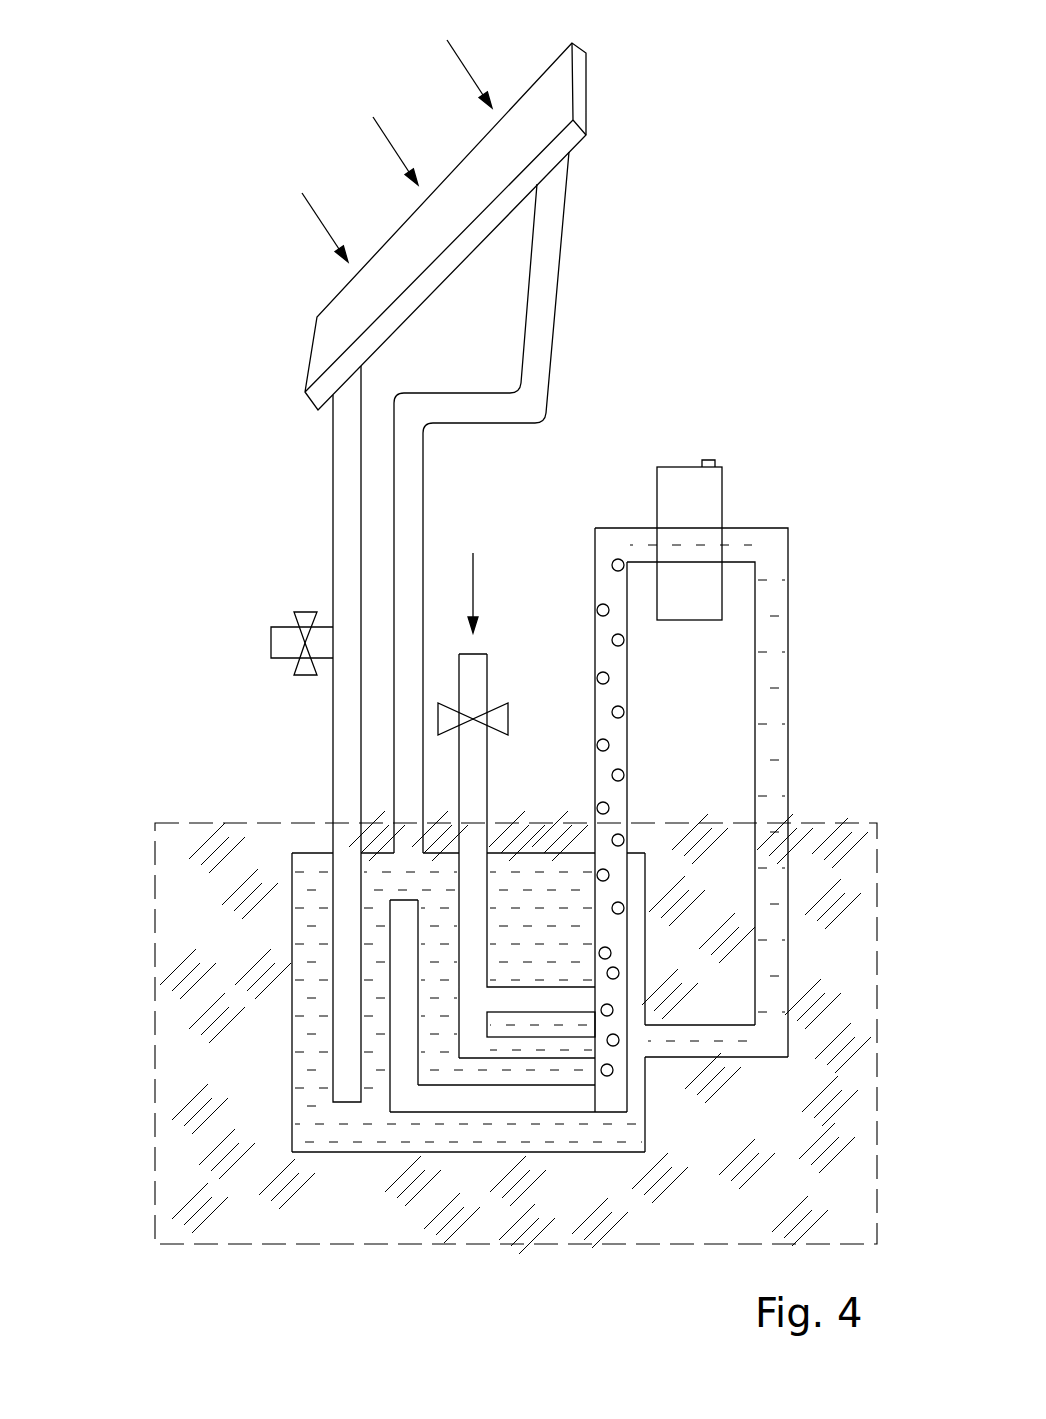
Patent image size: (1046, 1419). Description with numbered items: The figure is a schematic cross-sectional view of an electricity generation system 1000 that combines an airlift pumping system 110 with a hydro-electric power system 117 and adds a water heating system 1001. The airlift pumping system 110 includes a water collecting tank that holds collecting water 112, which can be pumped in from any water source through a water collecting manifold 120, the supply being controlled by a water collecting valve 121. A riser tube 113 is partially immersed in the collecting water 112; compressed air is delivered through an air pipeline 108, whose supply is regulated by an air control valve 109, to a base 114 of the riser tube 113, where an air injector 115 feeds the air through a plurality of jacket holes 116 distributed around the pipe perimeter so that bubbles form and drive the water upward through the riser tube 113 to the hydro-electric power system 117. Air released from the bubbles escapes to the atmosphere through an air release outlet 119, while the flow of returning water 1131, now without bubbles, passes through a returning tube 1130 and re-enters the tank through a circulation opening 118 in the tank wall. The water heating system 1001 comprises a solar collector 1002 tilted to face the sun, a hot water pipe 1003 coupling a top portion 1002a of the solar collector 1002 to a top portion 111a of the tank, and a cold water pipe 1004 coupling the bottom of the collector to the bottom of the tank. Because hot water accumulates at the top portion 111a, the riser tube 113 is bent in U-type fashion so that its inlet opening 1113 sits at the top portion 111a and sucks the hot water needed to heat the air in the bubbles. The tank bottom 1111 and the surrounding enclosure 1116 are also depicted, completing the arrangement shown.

The electricity generation system 1000 is at (217, 621).
The water heating system 1001 is at (291, 375).
The solar collector 1002 is at (530, 123).
The top portion of the solar collector 1002a is at (580, 103).
The hot water pipe 1003 is at (547, 303).
The cold water pipe 1004 is at (331, 478).
The water collecting manifold 120 is at (290, 648).
The water collecting valve 121 is at (307, 610).
The air pipeline 108 is at (470, 753).
The air control valve 109 is at (497, 703).
The airlift pumping system 110 is at (605, 1091).
The top portion of the water collecting tank 111a is at (298, 842).
The collecting water 112 is at (310, 1057).
The riser tube 113 is at (628, 1050).
The base of the riser tube 114 is at (563, 1072).
The air injector 115 is at (460, 1112).
The jacket holes 116 is at (578, 1053).
The hydro-electric power system 117 is at (715, 495).
The circulation opening 118 is at (687, 1040).
The air release outlet 119 is at (705, 458).
The tank bottom wall 1111 is at (613, 1152).
The inlet opening of the riser tube 1113 is at (403, 900).
The insulating enclosure 1116 is at (265, 1125).
The returning tube 1130 is at (743, 1058).
The returning water 1131 is at (790, 947).